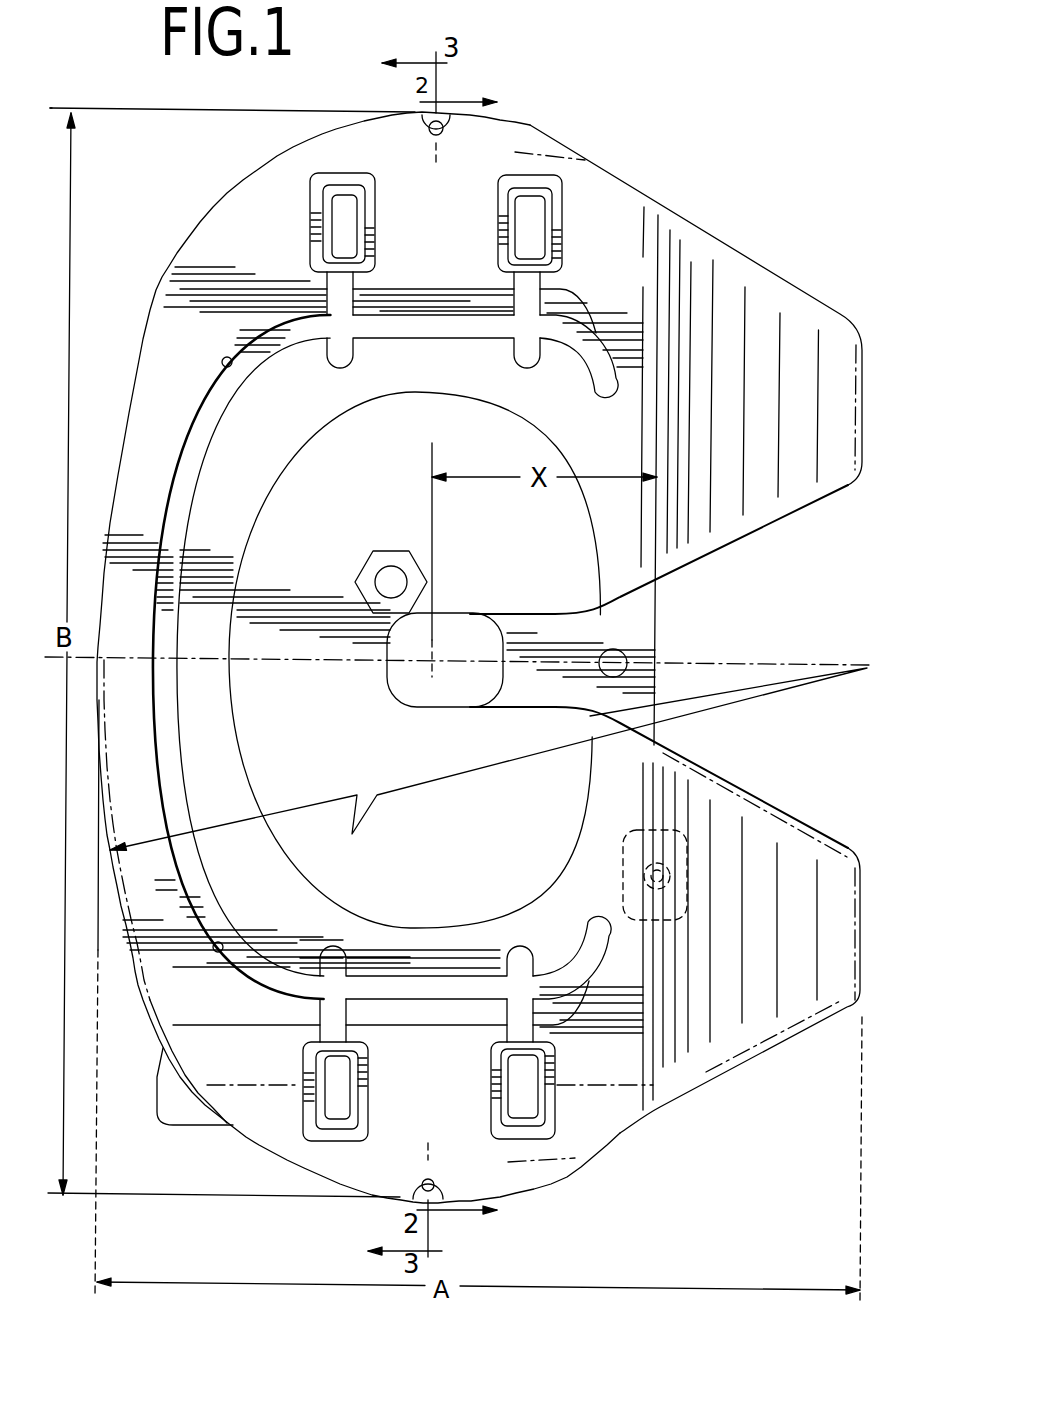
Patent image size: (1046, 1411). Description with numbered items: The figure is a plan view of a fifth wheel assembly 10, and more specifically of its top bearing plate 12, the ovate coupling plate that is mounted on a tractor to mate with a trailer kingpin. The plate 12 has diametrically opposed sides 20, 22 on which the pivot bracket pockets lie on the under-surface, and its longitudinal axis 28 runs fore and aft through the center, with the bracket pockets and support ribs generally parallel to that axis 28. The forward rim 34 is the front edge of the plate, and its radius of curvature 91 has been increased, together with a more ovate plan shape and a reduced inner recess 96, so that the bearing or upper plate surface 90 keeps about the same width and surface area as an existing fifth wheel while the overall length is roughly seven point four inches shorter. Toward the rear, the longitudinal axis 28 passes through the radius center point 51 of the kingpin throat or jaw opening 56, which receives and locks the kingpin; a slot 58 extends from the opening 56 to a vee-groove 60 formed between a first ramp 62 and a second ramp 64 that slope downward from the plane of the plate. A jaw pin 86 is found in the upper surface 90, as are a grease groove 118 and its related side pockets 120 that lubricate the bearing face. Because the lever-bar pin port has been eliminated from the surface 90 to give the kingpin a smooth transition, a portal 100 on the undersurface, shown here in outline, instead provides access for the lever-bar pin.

The fifth wheel assembly 10 is at (165, 148).
The top bearing plate 12 is at (532, 126).
The diametrically opposed side 20 is at (427, 1200).
The diametrically opposed side 22 is at (433, 113).
The longitudinal axis 28 is at (802, 665).
The forward rim 34 is at (133, 963).
The radius center point 51 is at (432, 663).
The jaw opening 56 is at (455, 640).
The slot 58 is at (550, 643).
The vee-groove 60 is at (630, 623).
The first ramp 62 is at (782, 304).
The second ramp 64 is at (797, 847).
The jaw pin 86 is at (385, 560).
The upper plate surface 90 is at (181, 352).
The radius of curvature 91 is at (443, 777).
The inner recess 96 is at (503, 448).
The portal 100 is at (630, 847).
The grease groove 118 is at (250, 967).
The side pockets 120 is at (367, 210).